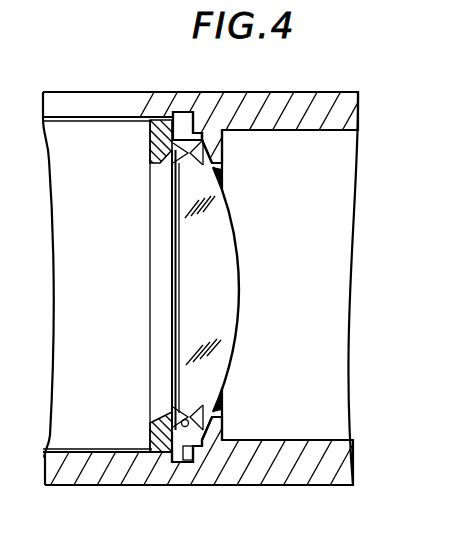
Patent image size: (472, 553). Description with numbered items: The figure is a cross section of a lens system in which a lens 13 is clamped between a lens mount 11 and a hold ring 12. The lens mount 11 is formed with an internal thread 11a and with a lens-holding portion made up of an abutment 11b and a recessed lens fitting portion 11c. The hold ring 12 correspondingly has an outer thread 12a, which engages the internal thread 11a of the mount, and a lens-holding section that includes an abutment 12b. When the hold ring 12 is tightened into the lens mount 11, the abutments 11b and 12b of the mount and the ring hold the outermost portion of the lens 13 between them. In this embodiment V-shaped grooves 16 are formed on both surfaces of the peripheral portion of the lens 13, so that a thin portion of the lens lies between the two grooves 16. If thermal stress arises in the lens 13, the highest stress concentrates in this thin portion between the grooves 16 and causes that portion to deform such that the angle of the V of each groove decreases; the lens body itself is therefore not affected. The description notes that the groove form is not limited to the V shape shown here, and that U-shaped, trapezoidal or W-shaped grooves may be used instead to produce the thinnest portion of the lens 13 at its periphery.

The lens mount 11 is at (312, 460).
The internal thread 11a is at (95, 462).
The abutment 11b is at (205, 131).
The recessed lens fitting portion 11c is at (188, 462).
The hold ring 12 is at (157, 256).
The outer thread 12a is at (163, 120).
The abutment 12b is at (179, 111).
The lens 13 is at (228, 303).
The V-shaped grooves 16 is at (187, 419).